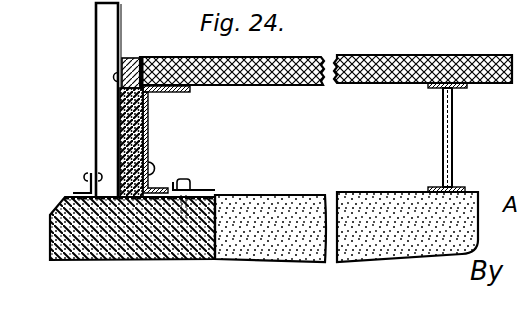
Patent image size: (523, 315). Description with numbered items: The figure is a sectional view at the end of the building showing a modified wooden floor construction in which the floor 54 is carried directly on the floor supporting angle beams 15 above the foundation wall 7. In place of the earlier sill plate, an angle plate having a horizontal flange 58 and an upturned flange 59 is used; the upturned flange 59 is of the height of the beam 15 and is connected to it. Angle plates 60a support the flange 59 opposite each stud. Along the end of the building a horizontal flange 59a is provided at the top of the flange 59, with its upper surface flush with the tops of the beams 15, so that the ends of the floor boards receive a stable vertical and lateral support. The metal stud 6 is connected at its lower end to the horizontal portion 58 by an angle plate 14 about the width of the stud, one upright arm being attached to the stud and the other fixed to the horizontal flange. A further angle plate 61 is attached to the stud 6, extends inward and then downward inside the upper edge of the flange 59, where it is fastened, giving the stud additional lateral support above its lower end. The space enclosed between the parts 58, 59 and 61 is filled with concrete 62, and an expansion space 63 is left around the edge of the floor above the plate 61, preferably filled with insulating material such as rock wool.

The metal stud 6 is at (97, 58).
The foundation wall 7 is at (52, 240).
The angle plate 14 is at (78, 195).
The floor supporting angle beam 15 is at (443, 129).
The wooden floor 54 is at (300, 57).
The horizontal flange 58 is at (108, 256).
The upturned flange 59 is at (150, 128).
The horizontal flange 59a is at (175, 93).
The angle plate 60a is at (157, 168).
The angle plate 61 is at (151, 56).
The concrete 62 is at (120, 130).
The expansion space 63 is at (132, 55).